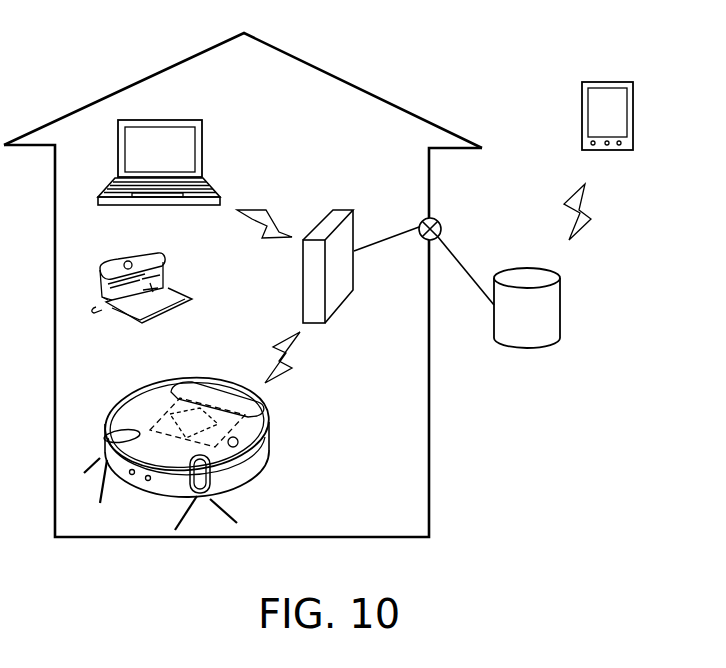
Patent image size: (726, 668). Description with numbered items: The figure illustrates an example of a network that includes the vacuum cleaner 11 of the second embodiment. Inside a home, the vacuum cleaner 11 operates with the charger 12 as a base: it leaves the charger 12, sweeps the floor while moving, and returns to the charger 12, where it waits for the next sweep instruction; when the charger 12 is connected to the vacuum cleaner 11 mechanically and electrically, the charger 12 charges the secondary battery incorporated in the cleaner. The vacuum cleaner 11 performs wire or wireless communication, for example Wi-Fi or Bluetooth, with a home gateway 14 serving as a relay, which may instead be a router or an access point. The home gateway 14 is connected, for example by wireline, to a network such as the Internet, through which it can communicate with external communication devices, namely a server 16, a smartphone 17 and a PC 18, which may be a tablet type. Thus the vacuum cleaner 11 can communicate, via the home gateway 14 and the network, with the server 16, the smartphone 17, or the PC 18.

The vacuum cleaner 11 is at (268, 445).
The charger 12 is at (164, 266).
The home gateway 14 is at (345, 211).
The server 16 is at (560, 305).
The smartphone 17 is at (633, 116).
The PC 18 is at (203, 147).